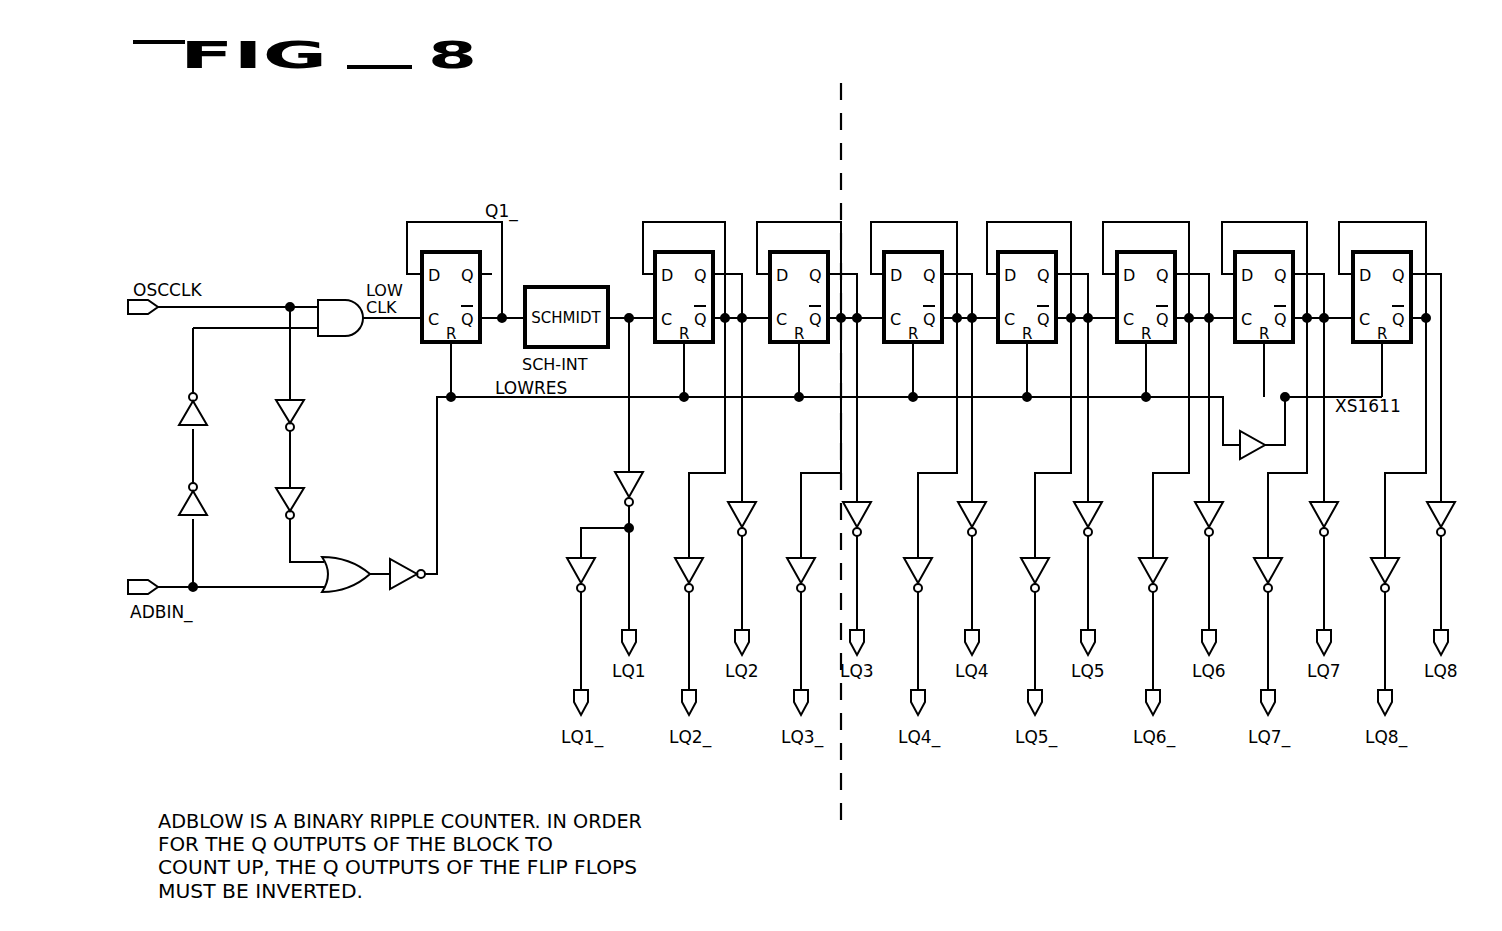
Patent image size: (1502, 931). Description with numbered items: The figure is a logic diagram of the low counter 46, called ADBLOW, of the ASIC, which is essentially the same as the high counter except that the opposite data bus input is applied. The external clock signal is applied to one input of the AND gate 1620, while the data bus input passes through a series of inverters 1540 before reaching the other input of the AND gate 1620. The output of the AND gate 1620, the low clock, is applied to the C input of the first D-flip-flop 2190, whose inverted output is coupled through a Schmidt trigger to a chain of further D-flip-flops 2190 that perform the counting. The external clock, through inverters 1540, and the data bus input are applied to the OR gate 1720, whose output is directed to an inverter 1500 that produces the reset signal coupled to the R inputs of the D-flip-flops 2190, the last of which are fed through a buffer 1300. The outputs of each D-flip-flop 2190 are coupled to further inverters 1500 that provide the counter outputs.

The low counter 46 is at (951, 108).
The AND gate 1620 is at (345, 330).
The OR gate 1720 is at (337, 589).
The inverter 1540 is at (266, 453).
The inverter 1500 is at (922, 531).
The D-flip-flop 2190 is at (916, 309).
The buffer 1300 is at (1249, 432).